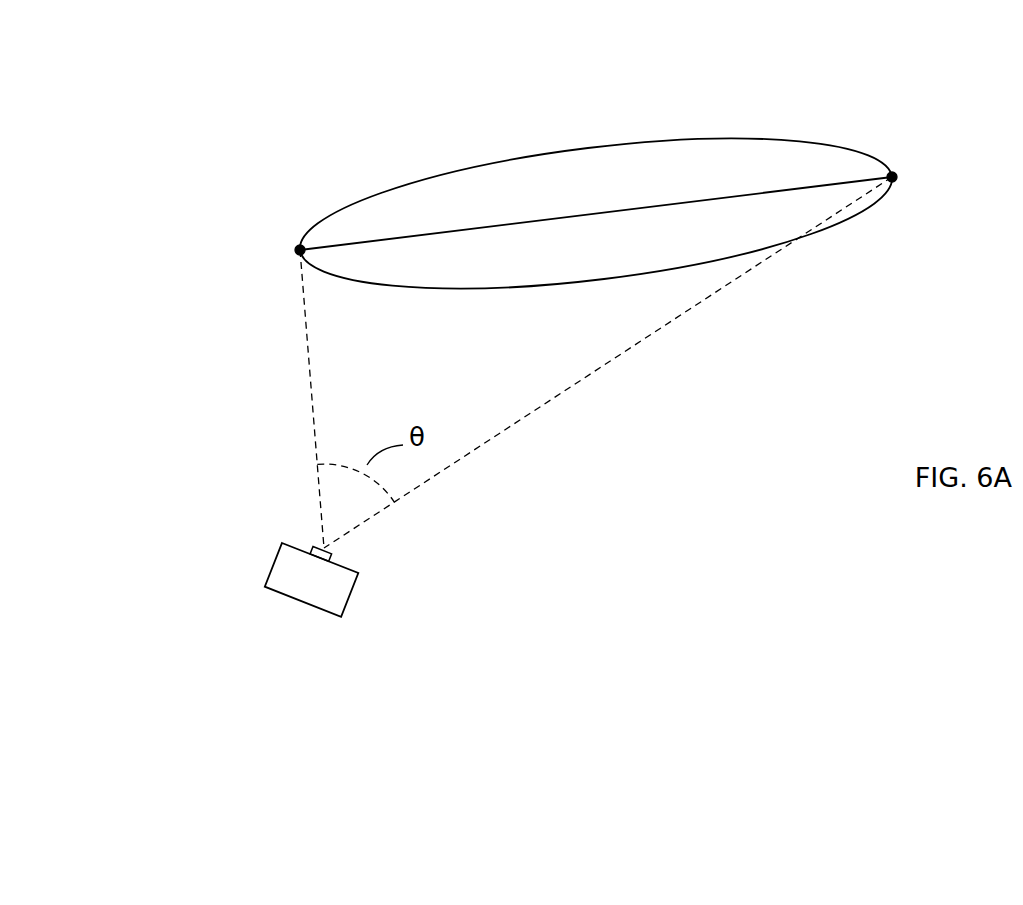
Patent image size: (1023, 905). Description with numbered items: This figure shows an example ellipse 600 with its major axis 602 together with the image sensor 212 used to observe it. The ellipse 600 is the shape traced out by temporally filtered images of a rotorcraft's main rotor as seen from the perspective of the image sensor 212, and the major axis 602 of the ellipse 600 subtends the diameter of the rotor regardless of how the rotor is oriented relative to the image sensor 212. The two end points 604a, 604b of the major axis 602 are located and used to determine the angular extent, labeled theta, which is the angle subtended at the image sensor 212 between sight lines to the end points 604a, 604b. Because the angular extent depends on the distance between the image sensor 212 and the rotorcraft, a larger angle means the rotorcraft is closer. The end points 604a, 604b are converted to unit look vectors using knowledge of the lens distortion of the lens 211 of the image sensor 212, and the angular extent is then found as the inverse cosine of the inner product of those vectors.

The ellipse 600 is at (803, 138).
The major axis 602 is at (628, 209).
The end point 604a is at (300, 250).
The end point 604b is at (897, 177).
The image sensor 212 is at (288, 580).
The lens 211 is at (335, 555).